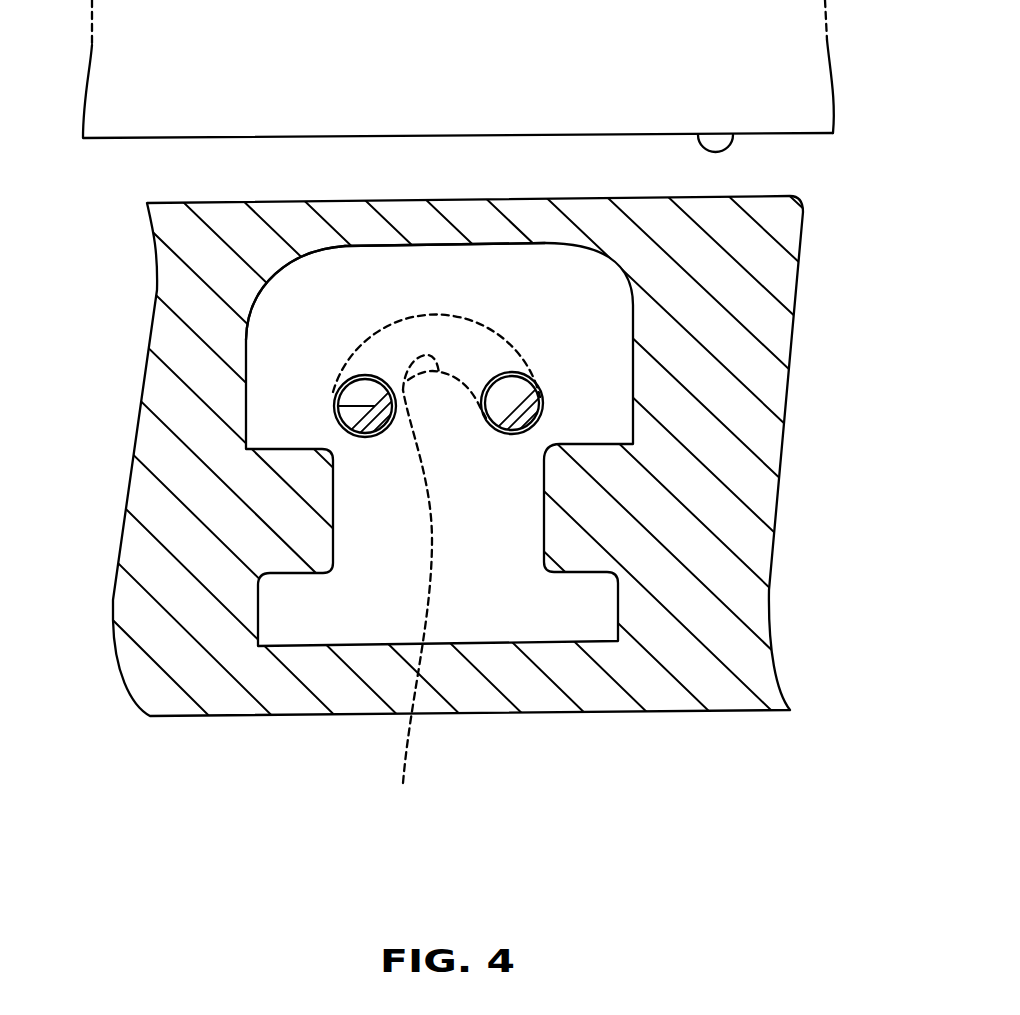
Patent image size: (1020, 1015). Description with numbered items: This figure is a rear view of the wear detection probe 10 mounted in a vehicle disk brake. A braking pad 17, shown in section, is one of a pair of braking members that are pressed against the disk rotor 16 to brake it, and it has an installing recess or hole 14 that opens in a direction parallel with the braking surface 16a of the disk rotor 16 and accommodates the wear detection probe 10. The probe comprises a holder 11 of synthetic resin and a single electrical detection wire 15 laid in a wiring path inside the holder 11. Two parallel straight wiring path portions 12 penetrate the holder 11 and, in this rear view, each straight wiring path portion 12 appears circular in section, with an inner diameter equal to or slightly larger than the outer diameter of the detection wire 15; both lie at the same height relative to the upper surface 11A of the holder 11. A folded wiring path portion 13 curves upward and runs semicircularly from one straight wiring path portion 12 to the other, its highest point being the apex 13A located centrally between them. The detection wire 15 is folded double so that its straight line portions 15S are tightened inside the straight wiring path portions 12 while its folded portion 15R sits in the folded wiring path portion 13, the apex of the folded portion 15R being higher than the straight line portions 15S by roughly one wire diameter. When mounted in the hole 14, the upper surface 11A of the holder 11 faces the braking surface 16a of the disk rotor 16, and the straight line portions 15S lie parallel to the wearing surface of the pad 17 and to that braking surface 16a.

The wear detection probe 10 is at (742, 428).
The holder 11 is at (503, 597).
The upper surface of the holder 11A is at (350, 245).
The straight wiring path portion 12 is at (360, 425).
The folded wiring path portion 13 is at (460, 345).
The apex of the folded wiring path portion 13A is at (403, 613).
The installing recess or hole 14 is at (267, 272).
The detection wire 15 is at (311, 425).
The straight line portions of the detection wire 15S is at (354, 411).
The folded portion of the detection wire 15R is at (447, 322).
The disk rotor 16 is at (780, 110).
The braking surface of the disk rotor 16a is at (737, 133).
The braking pad 17 is at (716, 533).